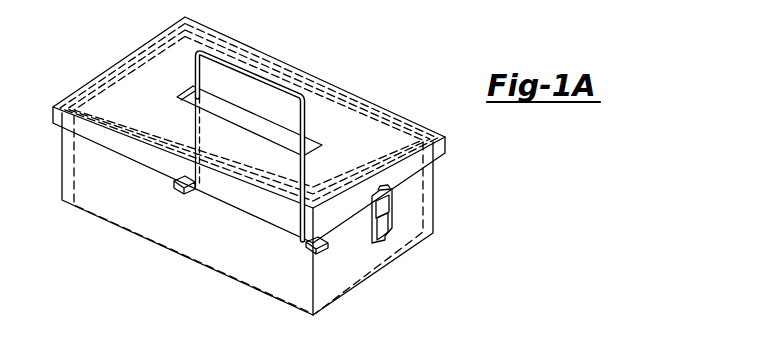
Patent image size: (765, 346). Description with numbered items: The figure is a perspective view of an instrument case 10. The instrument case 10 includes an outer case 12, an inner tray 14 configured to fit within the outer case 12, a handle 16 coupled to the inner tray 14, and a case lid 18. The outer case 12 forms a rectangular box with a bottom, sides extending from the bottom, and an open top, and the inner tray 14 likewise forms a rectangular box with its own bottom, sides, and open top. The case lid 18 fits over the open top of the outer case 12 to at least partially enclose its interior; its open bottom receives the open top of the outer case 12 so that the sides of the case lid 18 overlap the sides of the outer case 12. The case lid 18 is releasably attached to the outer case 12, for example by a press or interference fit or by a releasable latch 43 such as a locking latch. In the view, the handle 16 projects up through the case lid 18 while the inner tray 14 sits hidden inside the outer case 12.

The instrument case 10 is at (265, 162).
The outer case 12 is at (112, 191).
The inner tray 14 is at (253, 114).
The handle 16 is at (231, 62).
The case lid 18 is at (357, 133).
The releasable latch 43 is at (397, 217).